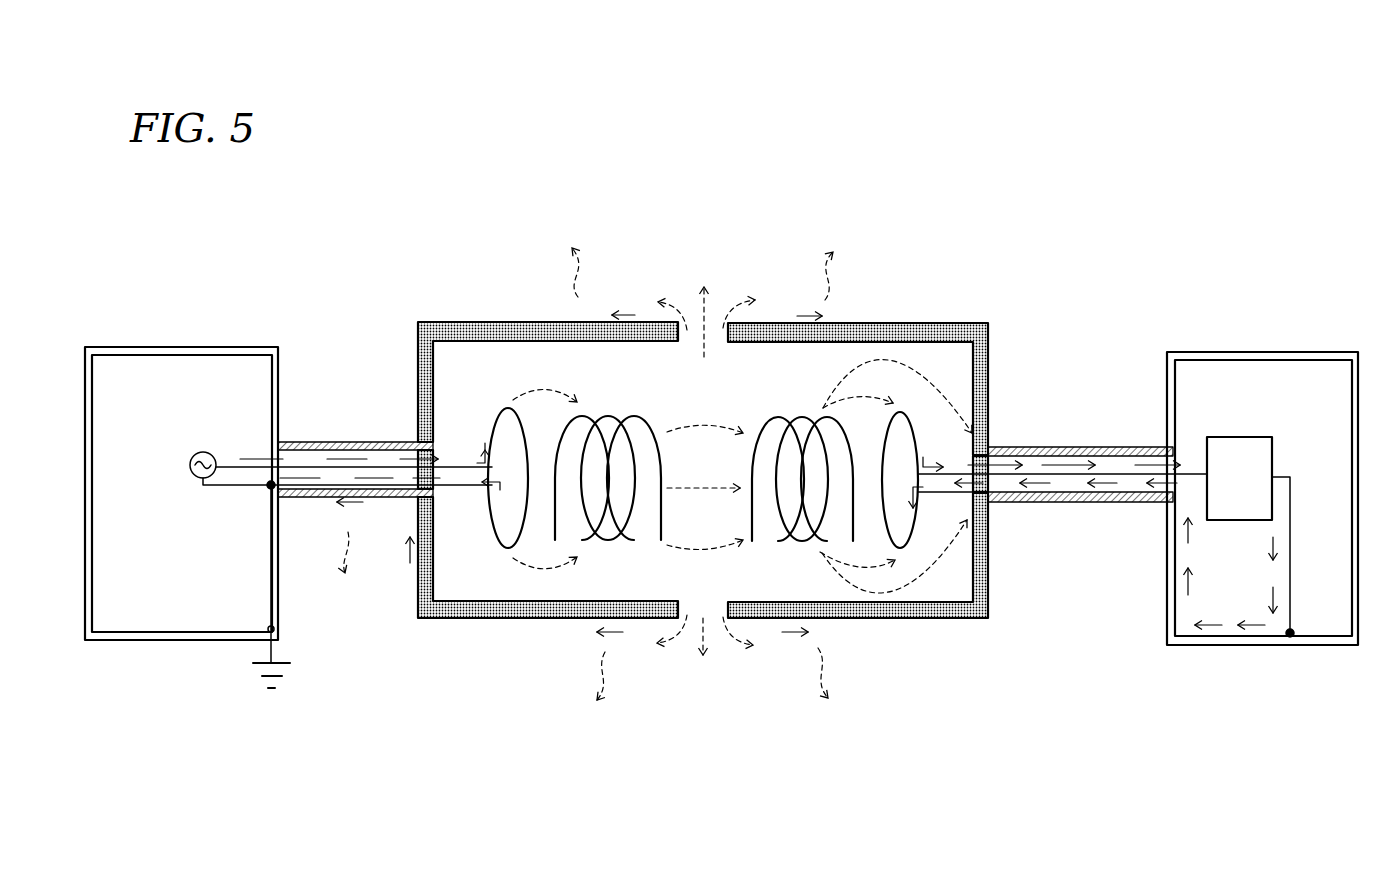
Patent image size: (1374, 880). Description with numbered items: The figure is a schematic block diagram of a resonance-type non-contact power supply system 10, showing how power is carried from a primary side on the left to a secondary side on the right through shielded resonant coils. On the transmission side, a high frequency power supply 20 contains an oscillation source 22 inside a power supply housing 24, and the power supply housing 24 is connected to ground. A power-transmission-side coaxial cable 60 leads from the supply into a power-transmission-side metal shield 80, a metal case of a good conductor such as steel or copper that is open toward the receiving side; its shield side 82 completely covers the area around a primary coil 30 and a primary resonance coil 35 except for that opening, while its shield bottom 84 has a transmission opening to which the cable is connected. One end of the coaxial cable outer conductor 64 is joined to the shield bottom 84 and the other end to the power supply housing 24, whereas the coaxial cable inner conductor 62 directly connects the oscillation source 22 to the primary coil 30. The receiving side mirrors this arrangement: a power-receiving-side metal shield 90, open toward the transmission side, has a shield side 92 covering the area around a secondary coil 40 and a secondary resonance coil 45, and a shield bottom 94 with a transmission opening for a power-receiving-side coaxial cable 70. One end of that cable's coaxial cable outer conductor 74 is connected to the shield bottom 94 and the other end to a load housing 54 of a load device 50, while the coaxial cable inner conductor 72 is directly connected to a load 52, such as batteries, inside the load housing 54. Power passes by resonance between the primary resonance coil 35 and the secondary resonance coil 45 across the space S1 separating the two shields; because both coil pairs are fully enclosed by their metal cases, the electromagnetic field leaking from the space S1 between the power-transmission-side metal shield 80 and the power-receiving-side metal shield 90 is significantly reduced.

The resonance-type non-contact power supply system 10 is at (173, 237).
The high frequency power supply 20 is at (160, 667).
The oscillation source 22 is at (190, 463).
The power supply housing 24 is at (115, 642).
The power-transmission-side coaxial cable 60 is at (377, 393).
The coaxial cable inner conductor 62 is at (315, 467).
The coaxial cable outer conductor 64 is at (362, 442).
The power-transmission-side metal shield 80 is at (478, 283).
The shield side 82 is at (530, 322).
The shield bottom 84 is at (406, 353).
The primary coil 30 is at (488, 533).
The primary resonance coil 35 is at (600, 417).
The space S1 is at (718, 633).
The power-receiving-side metal shield 90 is at (908, 288).
The shield side 92 is at (882, 323).
The shield bottom 94 is at (990, 362).
The secondary resonance coil 45 is at (778, 417).
The secondary coil 40 is at (913, 533).
The power-receiving-side coaxial cable 70 is at (1098, 410).
The coaxial cable inner conductor 72 is at (1073, 475).
The coaxial cable outer conductor 74 is at (1135, 502).
The load device 50 is at (1270, 680).
The load 52 is at (1247, 437).
The load housing 54 is at (1217, 352).